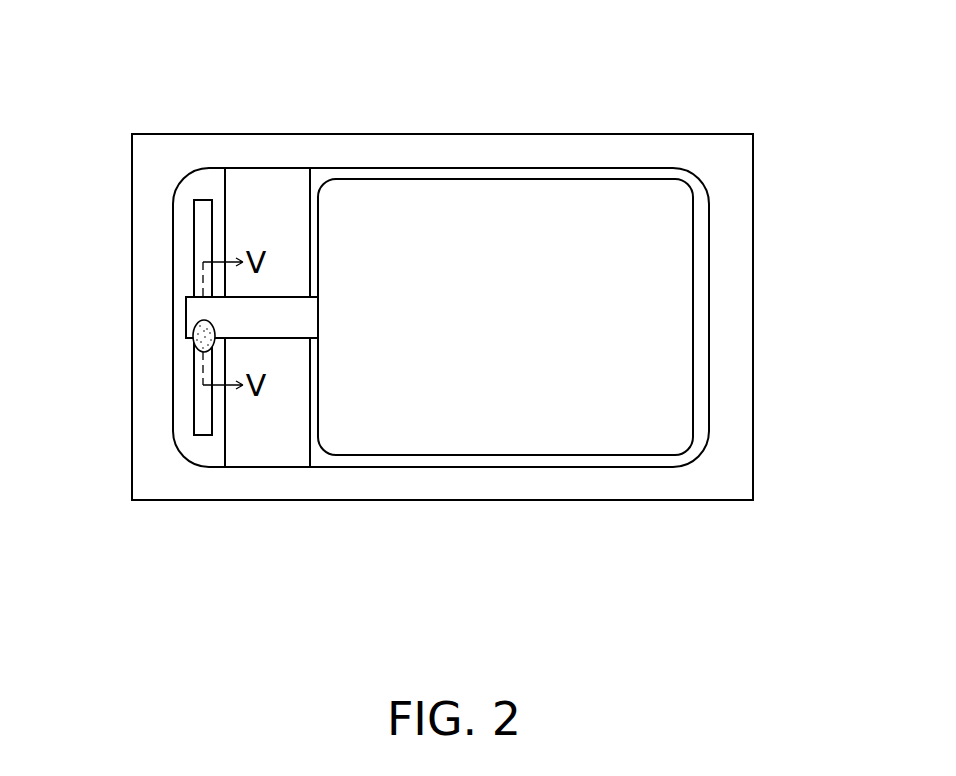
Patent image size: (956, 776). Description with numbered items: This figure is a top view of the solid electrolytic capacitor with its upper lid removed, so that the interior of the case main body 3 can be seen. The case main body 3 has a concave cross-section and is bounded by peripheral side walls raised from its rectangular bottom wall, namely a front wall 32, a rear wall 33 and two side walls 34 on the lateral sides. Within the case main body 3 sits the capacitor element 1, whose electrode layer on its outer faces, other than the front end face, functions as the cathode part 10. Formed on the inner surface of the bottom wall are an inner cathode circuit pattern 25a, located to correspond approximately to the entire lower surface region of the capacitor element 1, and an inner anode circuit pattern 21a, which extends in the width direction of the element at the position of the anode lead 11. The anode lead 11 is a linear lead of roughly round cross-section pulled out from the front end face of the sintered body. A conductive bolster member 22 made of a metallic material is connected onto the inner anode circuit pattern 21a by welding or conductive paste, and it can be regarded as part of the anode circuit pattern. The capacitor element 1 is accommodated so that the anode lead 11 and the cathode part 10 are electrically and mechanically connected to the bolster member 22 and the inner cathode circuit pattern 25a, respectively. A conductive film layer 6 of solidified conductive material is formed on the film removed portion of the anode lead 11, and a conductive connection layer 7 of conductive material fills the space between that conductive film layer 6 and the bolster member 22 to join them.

The capacitor element 1 is at (558, 407).
The case main body 3 is at (760, 315).
The conductive film layer 6 is at (192, 322).
The conductive connection layer 7 is at (195, 350).
The cathode part 10 is at (495, 230).
The anode lead 11 is at (277, 318).
The inner anode circuit pattern 21a is at (185, 273).
The conductive bolster member 22 is at (201, 220).
The inner cathode circuit pattern 25a is at (699, 243).
The front wall 32 is at (148, 352).
The rear wall 33 is at (735, 372).
The side walls 34 is at (393, 147).